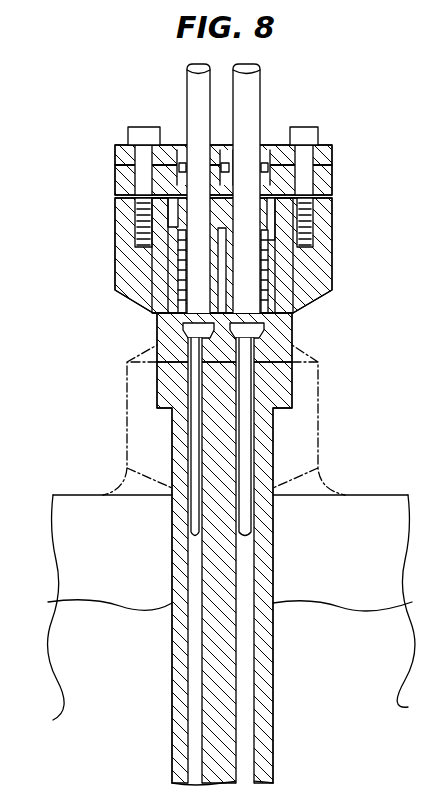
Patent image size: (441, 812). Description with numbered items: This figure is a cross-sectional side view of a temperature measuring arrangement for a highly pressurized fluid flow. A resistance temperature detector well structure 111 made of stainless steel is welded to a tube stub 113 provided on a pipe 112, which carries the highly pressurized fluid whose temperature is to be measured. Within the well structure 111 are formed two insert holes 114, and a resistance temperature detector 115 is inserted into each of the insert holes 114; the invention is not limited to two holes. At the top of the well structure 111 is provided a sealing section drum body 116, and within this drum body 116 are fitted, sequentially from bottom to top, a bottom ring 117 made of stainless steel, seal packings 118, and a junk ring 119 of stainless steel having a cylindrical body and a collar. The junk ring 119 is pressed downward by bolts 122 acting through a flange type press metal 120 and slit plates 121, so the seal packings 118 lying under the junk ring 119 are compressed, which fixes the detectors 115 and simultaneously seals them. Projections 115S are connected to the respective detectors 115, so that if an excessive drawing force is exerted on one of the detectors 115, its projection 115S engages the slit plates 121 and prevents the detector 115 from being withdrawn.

The resistance temperature detector well structure 111 is at (165, 393).
The pipe 112 is at (390, 495).
The tube stub 113 is at (312, 392).
The insert holes 114 is at (228, 600).
The resistance temperature detector 115 is at (190, 472).
The projection 115S is at (178, 148).
The sealing section drum body 116 is at (117, 215).
The bottom ring 117 is at (160, 315).
The seal packings 118 is at (177, 295).
The junk ring 119 is at (176, 240).
The flange type press metal 120 is at (331, 187).
The slit plates 121 is at (331, 153).
The bolts 122 is at (318, 137).